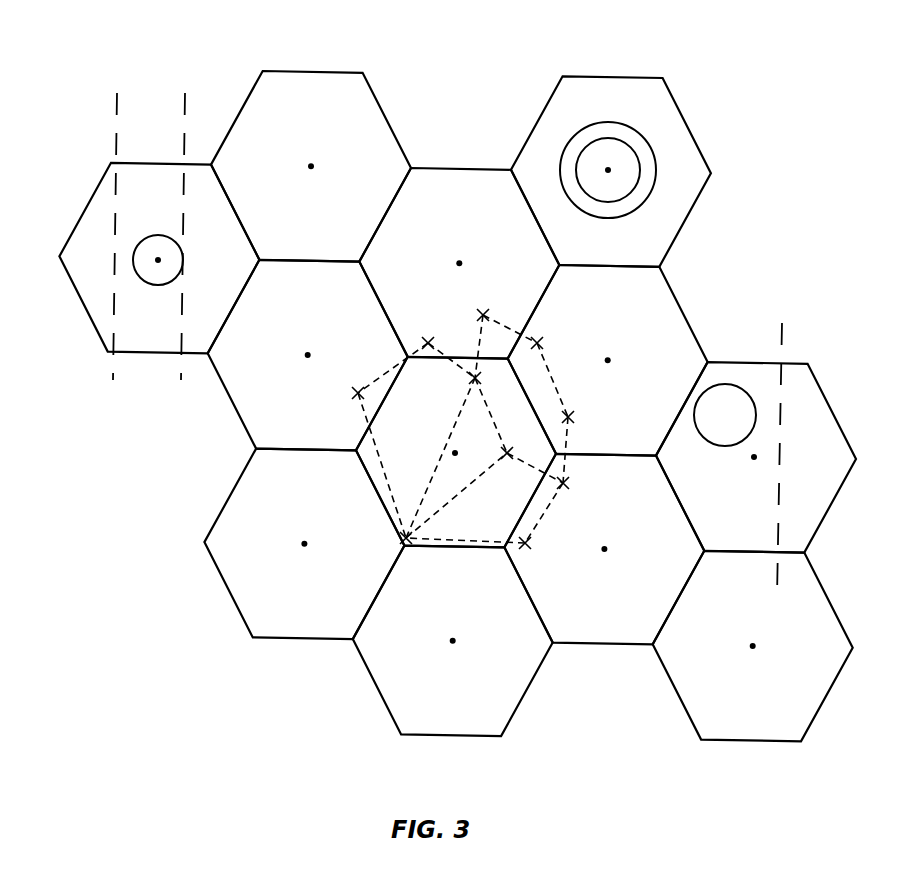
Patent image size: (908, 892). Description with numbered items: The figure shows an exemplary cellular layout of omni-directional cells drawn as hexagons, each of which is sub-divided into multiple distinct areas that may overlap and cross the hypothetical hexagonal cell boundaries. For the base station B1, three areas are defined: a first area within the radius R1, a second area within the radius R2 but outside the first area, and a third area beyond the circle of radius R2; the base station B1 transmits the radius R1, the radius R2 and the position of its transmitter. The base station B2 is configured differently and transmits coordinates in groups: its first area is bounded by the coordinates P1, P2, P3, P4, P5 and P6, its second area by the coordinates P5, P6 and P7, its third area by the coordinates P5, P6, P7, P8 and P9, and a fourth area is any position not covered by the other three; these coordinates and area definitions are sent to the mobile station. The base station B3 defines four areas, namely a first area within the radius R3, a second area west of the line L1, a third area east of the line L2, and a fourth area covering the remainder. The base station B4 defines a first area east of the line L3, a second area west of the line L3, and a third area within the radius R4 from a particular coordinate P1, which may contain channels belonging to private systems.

The base station B1 is at (611, 171).
The base station B2 is at (456, 452).
The base station B3 is at (159, 258).
The base station B4 is at (756, 457).
The radius R1 is at (637, 158).
The radius R2 is at (608, 170).
The radius R3 is at (179, 249).
The radius R4 is at (753, 400).
The line L1 is at (128, 250).
The line L2 is at (197, 251).
The line L3 is at (793, 469).
The coordinate P1 is at (601, 358).
The coordinate P2 is at (545, 332).
The coordinate P3 is at (581, 409).
The coordinate P4 is at (576, 483).
The coordinate P5 is at (518, 448).
The coordinate P6 is at (487, 378).
The coordinate P7 is at (394, 541).
The coordinate P8 is at (439, 483).
The coordinate P9 is at (435, 334).